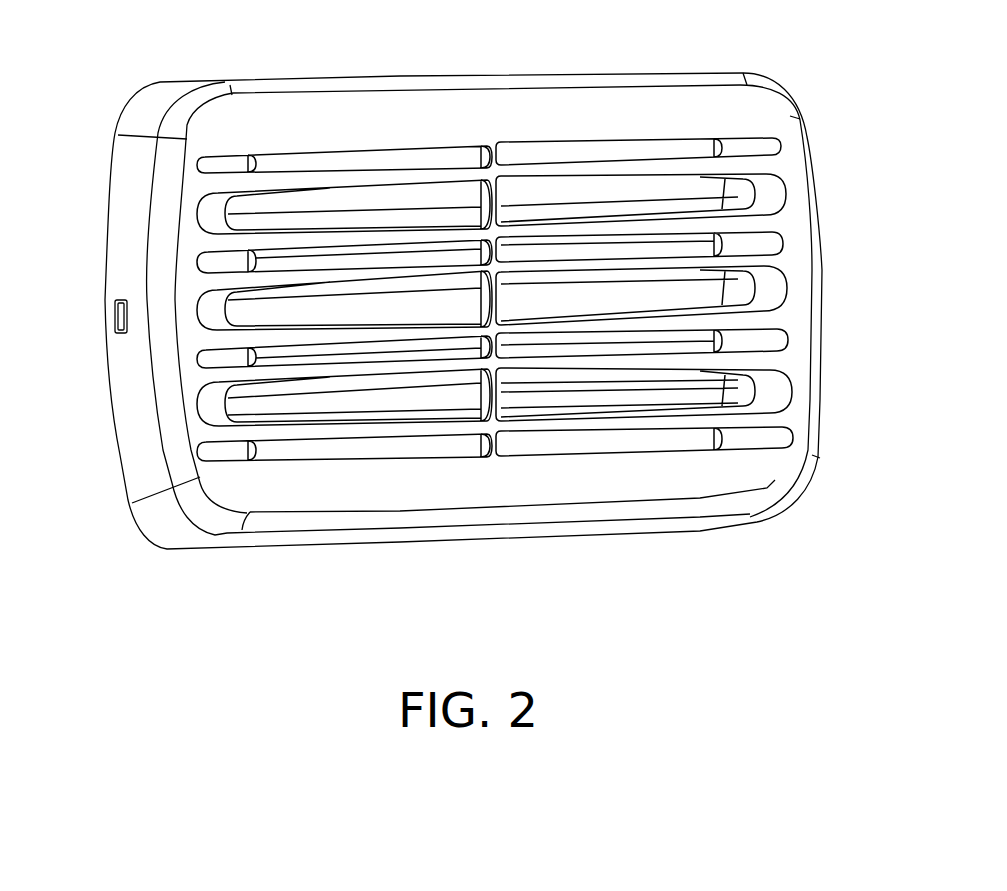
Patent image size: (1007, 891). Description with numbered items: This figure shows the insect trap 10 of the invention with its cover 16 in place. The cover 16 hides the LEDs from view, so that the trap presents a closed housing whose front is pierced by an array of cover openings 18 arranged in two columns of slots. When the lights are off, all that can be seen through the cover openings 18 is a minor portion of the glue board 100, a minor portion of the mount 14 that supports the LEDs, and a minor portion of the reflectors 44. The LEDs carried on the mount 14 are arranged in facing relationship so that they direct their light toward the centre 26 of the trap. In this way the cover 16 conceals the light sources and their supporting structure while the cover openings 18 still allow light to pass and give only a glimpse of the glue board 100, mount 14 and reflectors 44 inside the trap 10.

The insect trap 10 is at (225, 493).
The mount 14 is at (683, 126).
The cover 16 is at (508, 492).
The cover openings 18 is at (240, 312).
The centre 26 is at (503, 300).
The reflectors 44 is at (655, 212).
The glue board 100 is at (388, 357).